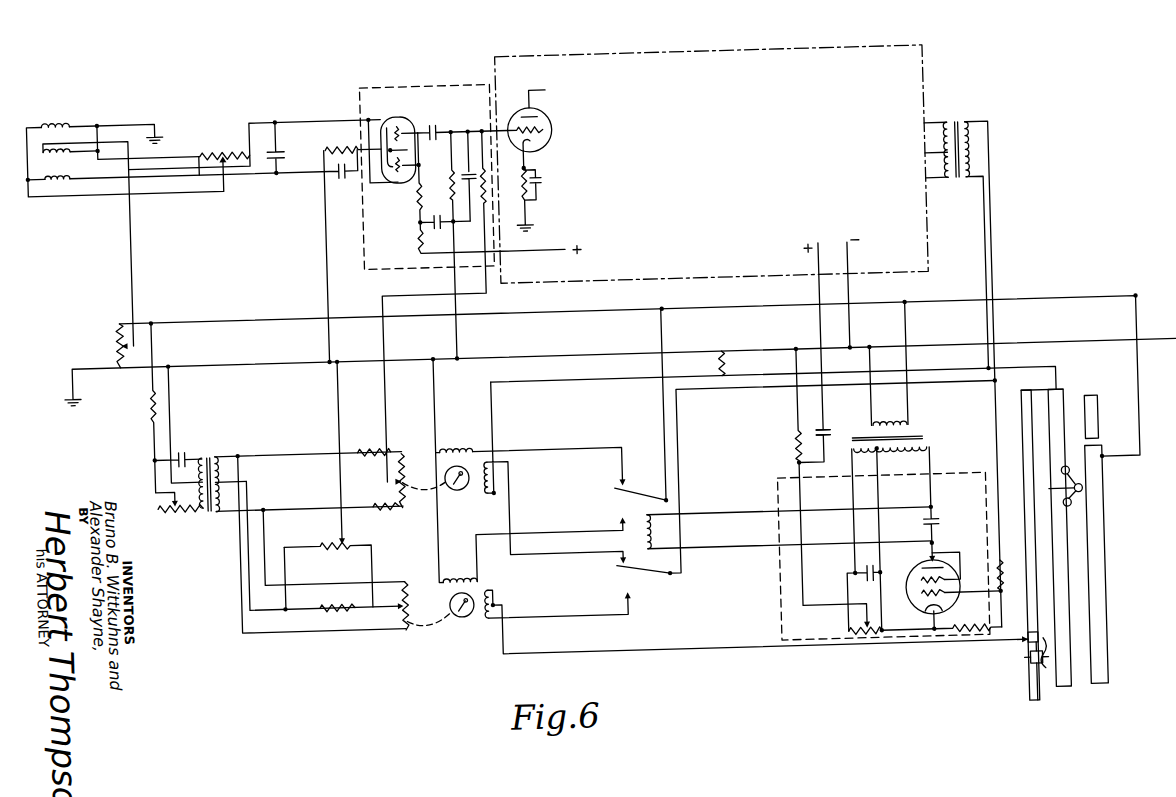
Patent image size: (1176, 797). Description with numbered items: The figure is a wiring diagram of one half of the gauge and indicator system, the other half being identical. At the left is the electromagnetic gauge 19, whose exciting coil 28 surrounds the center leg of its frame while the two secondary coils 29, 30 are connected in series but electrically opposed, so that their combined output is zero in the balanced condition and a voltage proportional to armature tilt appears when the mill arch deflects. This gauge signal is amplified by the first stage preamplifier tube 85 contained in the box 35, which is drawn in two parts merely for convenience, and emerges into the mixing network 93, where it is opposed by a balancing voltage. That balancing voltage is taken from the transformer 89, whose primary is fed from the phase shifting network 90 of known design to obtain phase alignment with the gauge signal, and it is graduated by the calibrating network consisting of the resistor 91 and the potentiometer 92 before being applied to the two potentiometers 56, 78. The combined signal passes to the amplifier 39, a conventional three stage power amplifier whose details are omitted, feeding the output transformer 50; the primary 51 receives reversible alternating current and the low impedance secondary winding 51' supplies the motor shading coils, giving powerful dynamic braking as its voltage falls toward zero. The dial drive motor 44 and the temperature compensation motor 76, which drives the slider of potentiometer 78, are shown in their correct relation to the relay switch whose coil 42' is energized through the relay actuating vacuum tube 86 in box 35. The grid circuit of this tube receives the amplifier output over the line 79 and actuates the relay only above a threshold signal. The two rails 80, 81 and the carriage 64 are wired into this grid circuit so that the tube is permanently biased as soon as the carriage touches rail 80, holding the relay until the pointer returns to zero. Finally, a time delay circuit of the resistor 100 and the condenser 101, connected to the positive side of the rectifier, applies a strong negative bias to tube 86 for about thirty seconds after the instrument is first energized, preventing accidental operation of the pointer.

The electromagnetic gauge 19 is at (214, 242).
The exciting coil 28 is at (70, 133).
The secondary coil 29 is at (58, 109).
The secondary coil 30 is at (56, 168).
The box 35 is at (385, 80).
The first stage preamplifier tube 85 is at (404, 113).
The mixing network 93 is at (463, 128).
The amplifier 39 is at (724, 251).
The transformer 50 is at (944, 130).
The primary 51 is at (968, 280).
The secondary winding 51' is at (991, 357).
The transformer 89 is at (211, 445).
The phase shifting network 90 is at (161, 489).
The potentiometer 92 is at (324, 486).
The resistor 91 is at (338, 618).
The potentiometer 78 is at (519, 467).
The temperature compensation motor 76 is at (436, 491).
The potentiometer 56 is at (521, 561).
The dial drive motor 44 is at (441, 618).
The coil 42' is at (787, 553).
The resistor 100 is at (790, 456).
The condenser 101 is at (829, 437).
The line 79 is at (990, 443).
The relay actuating vacuum tube 86 is at (934, 570).
The rail 81 is at (1096, 420).
The rail 80 is at (1099, 596).
The carriage 64 is at (1078, 504).